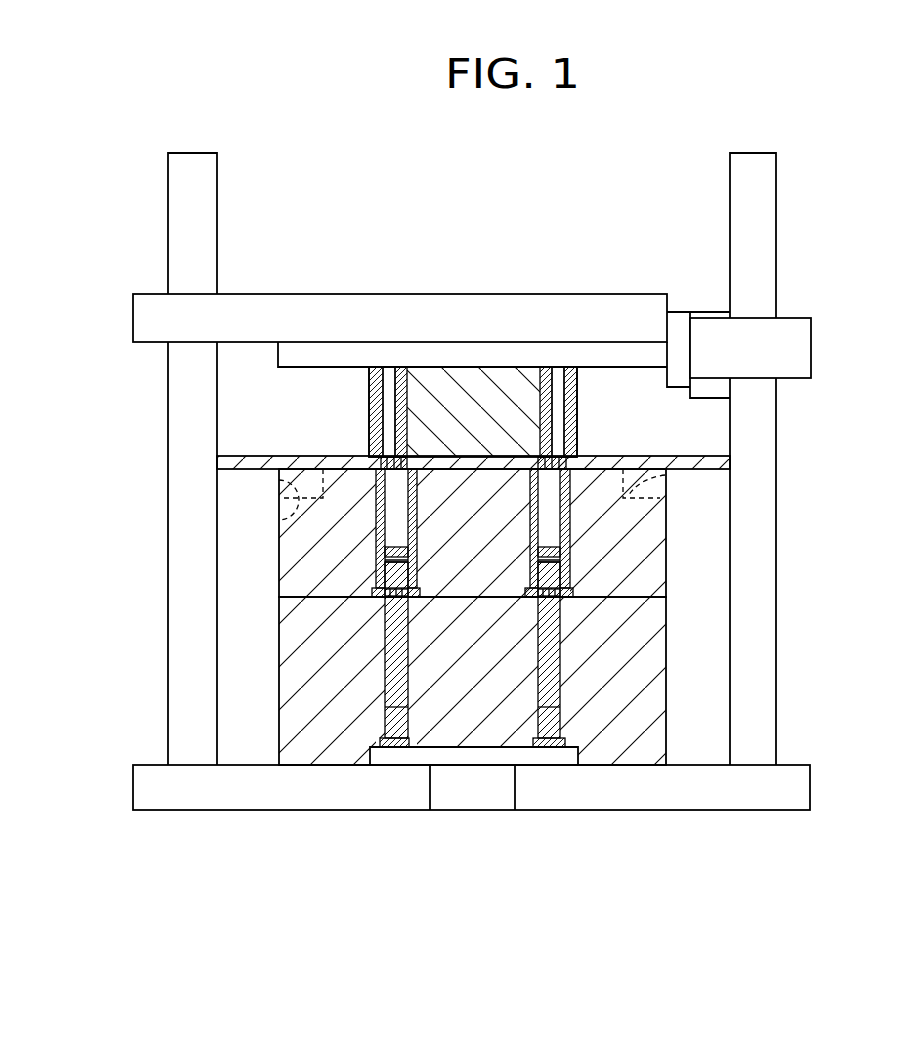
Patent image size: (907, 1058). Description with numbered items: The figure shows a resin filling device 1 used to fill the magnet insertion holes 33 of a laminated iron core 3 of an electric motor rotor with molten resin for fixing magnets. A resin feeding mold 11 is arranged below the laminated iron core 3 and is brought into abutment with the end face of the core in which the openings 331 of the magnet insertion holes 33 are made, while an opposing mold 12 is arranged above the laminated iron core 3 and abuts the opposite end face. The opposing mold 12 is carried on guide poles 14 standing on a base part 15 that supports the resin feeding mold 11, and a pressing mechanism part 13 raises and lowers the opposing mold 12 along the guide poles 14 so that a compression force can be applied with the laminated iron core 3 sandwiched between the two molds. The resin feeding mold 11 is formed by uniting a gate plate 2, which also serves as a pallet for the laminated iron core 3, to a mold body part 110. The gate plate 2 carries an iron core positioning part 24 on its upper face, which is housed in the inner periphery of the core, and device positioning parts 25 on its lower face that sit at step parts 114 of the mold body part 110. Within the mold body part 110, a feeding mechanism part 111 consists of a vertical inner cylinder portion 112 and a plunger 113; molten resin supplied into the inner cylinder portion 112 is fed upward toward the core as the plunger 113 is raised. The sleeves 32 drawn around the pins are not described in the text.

The resin filling device 1 is at (594, 167).
The gate plate 2 is at (482, 467).
The laminated iron core 3 is at (347, 339).
The resin feeding mold 11 is at (462, 617).
The opposing mold 12 is at (472, 285).
The pressing mechanism part 13 is at (413, 292).
The guide poles 14 is at (760, 260).
The base part 15 is at (775, 793).
The iron core positioning part 24 is at (458, 397).
The device positioning parts 25 is at (610, 457).
The sleeve 32 is at (546, 396).
The magnet insertion holes 33 is at (564, 397).
The mold body part 110 is at (277, 558).
The feeding mechanism part 111 is at (567, 605).
The inner cylinder portion 112 is at (570, 523).
The plunger 113 is at (560, 680).
The step parts 114 is at (278, 483).
The openings 331 is at (383, 453).